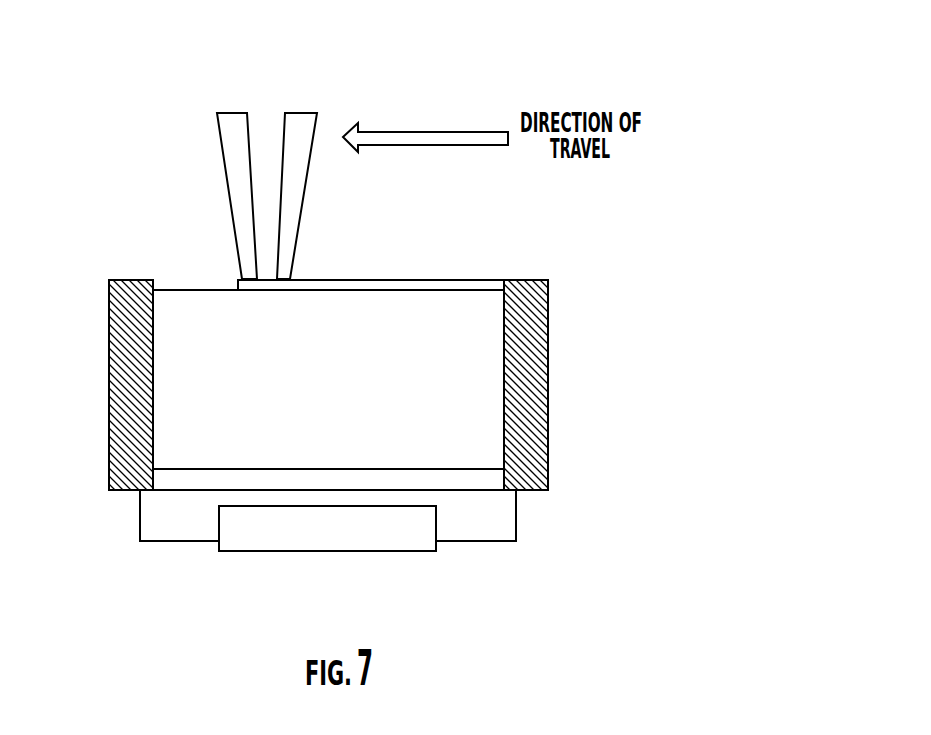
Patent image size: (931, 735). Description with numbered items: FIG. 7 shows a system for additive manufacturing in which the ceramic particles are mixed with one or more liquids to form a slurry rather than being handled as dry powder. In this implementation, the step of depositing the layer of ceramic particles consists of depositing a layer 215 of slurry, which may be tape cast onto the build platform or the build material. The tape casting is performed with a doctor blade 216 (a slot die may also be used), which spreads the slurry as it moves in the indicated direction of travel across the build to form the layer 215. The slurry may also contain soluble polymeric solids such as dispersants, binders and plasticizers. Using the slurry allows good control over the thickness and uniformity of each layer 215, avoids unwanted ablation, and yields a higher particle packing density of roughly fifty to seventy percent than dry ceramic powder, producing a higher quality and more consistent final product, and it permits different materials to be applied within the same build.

The layer of slurry 215 is at (235, 287).
The doctor blade 216 is at (218, 127).